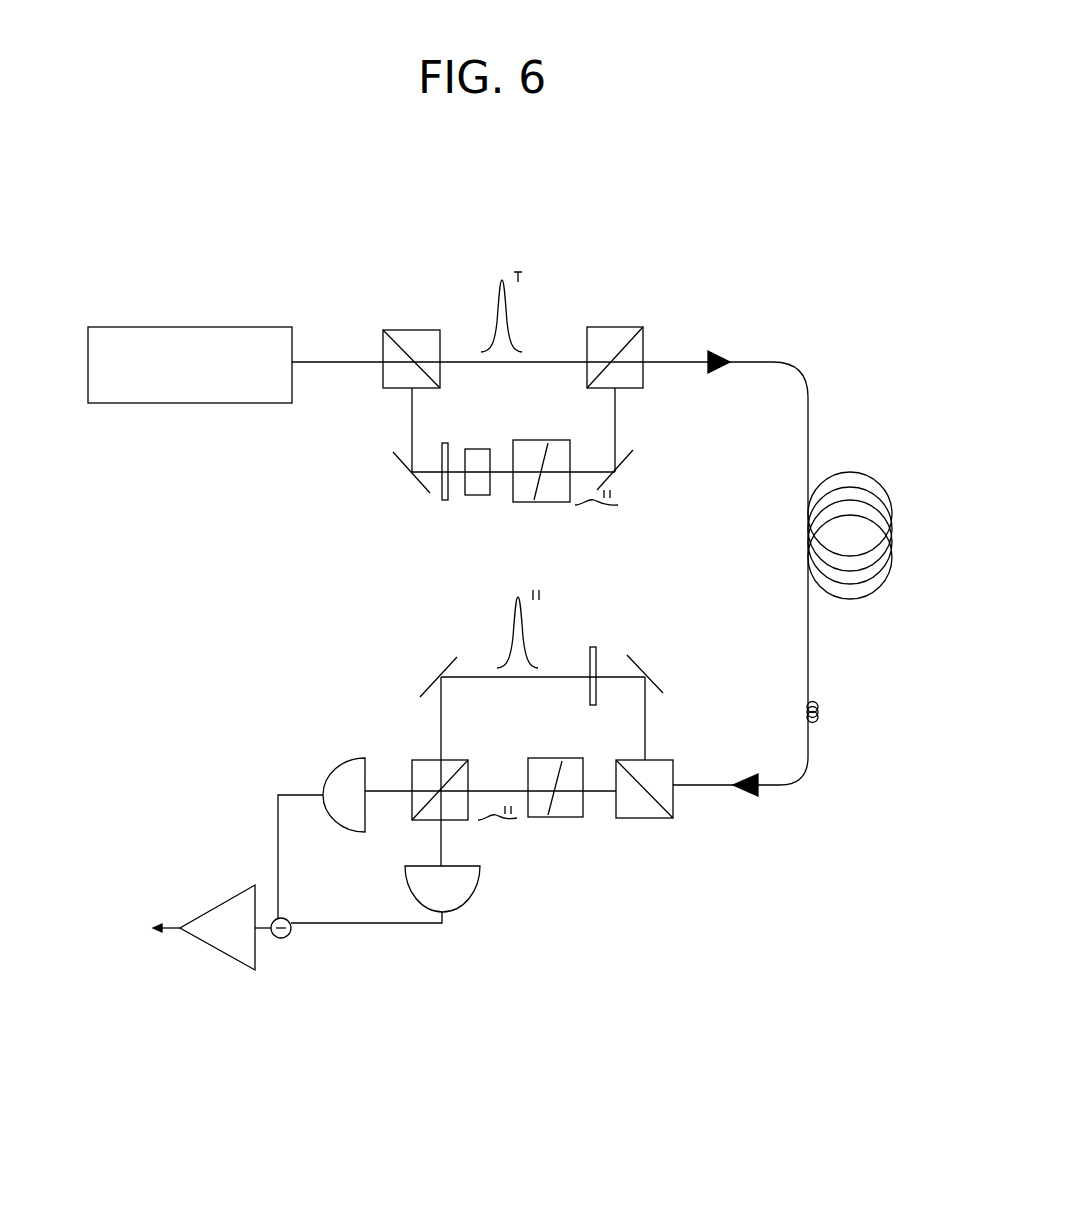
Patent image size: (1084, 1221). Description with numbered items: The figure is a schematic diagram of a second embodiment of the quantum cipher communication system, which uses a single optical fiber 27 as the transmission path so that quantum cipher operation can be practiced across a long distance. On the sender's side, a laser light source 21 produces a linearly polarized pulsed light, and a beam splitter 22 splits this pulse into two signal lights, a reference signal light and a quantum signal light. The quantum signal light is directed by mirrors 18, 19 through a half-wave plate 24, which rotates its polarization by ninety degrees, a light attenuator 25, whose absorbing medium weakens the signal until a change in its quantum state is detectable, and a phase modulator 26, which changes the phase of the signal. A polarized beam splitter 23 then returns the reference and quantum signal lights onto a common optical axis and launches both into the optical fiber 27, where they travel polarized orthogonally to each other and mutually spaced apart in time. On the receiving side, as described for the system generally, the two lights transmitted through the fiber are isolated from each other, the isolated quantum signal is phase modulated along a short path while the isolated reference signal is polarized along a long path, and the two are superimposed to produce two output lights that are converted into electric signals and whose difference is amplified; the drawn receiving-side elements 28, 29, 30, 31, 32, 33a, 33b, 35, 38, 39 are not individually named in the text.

The laser light source 21 is at (218, 325).
The beam splitter 22 is at (412, 328).
The polarized beam splitter 23 is at (606, 325).
The mirror 18 is at (395, 464).
The mirror 19 is at (632, 460).
The half-wave plate 24 is at (442, 502).
The light attenuator 25 is at (486, 496).
The phase modulator 26 is at (546, 504).
The optical fiber 27 is at (782, 352).
The polarization controller 28 is at (817, 724).
The polarization beam splitter 29 is at (650, 824).
The phase modulator 30 is at (564, 824).
The wave plate 31 is at (600, 644).
The polarization beam splitter 32 is at (409, 757).
The photodetector 33a is at (332, 780).
The photodetector 33b is at (480, 880).
The amplifier 35 is at (220, 952).
The mirror 38 is at (650, 678).
The mirror 39 is at (441, 672).